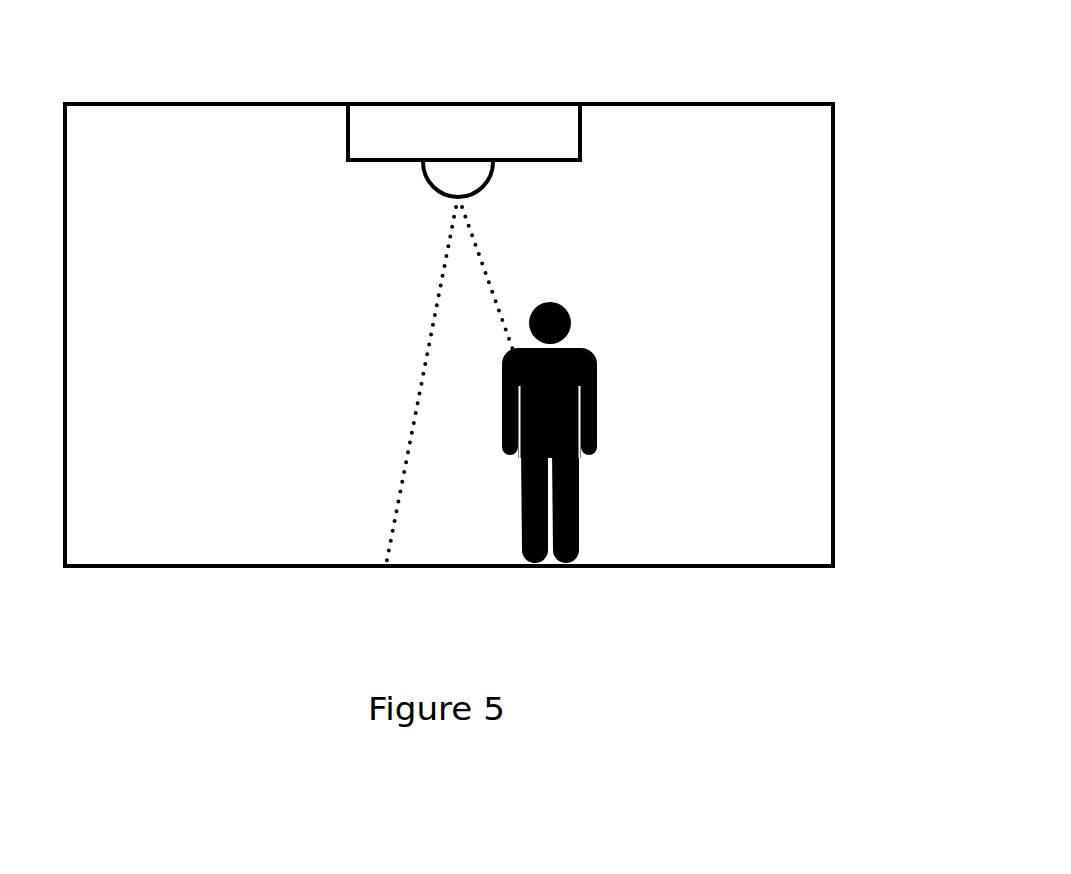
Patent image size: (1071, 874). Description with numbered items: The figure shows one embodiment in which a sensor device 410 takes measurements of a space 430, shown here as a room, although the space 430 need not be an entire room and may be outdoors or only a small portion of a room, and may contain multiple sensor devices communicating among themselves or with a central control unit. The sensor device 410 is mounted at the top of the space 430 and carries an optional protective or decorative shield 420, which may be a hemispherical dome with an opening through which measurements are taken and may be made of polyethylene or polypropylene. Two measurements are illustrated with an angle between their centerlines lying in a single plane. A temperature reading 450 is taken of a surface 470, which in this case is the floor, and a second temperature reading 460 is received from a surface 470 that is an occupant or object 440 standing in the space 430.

The sensor device 410 is at (464, 132).
The protective or decorative shield 420 is at (495, 168).
The space 430 is at (729, 101).
The occupant or object 440 is at (595, 405).
The temperature reading 450 is at (417, 410).
The temperature reading 460 is at (483, 270).
The surface 470 is at (215, 563).